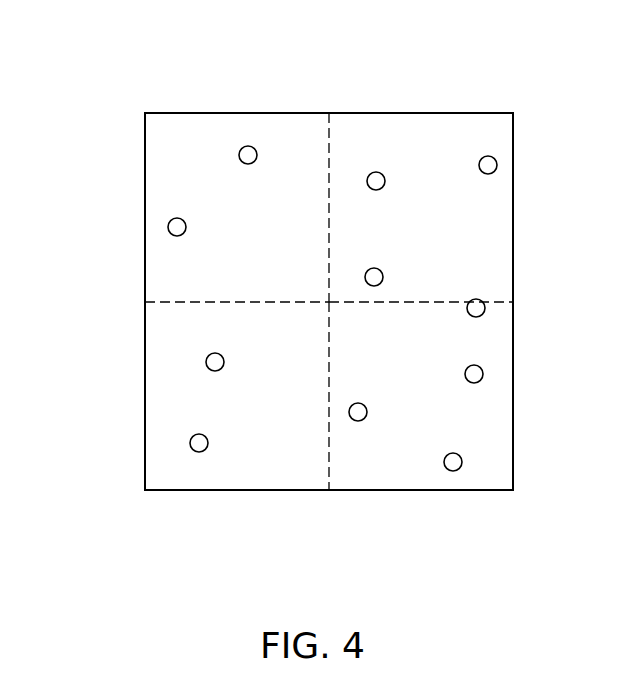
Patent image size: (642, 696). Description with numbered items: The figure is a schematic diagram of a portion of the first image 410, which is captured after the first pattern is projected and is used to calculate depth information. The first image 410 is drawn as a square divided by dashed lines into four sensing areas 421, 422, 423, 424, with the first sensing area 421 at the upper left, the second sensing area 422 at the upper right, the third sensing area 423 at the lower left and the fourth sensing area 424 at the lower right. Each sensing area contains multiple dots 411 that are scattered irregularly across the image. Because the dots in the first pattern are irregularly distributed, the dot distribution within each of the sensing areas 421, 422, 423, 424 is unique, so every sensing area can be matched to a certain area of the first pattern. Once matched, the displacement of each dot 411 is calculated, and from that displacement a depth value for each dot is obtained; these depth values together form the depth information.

The first image 410 is at (515, 207).
The dots 411 is at (248, 146).
The sensing area 421 is at (187, 113).
The sensing area 422 is at (442, 113).
The sensing area 423 is at (222, 490).
The sensing area 424 is at (430, 490).